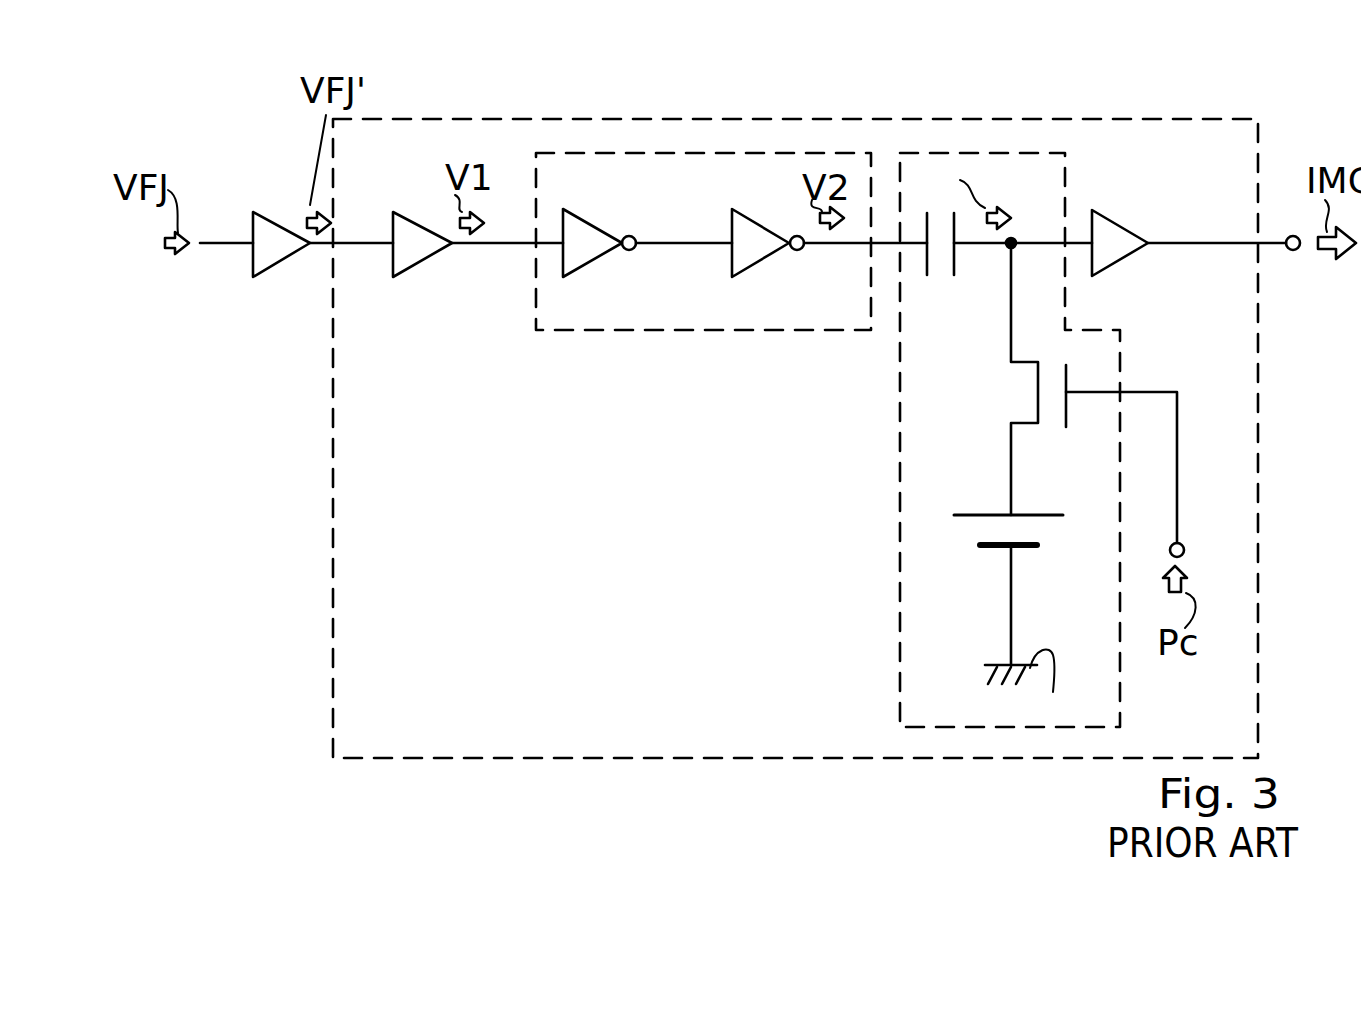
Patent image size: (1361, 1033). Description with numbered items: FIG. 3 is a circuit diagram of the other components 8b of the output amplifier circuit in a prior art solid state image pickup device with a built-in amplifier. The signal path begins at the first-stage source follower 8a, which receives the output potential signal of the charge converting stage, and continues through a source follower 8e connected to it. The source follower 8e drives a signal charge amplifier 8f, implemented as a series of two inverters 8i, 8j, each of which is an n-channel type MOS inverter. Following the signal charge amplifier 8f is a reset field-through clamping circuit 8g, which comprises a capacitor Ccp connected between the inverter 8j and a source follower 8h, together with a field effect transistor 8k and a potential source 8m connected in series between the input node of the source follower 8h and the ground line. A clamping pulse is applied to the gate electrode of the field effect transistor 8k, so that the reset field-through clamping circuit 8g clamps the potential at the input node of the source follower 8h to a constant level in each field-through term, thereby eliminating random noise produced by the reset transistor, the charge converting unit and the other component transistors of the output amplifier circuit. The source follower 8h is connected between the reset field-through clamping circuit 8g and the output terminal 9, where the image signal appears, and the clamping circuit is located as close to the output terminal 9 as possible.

The first-stage source follower 8a is at (273, 220).
The other components 8b is at (1124, 119).
The source follower 8e is at (408, 268).
The signal charge amplifier 8f is at (703, 278).
The reset field-through clamping circuit 8g is at (897, 692).
The source follower 8h is at (1120, 225).
The inverter 8i is at (590, 262).
The inverter 8j is at (748, 263).
The field effect transistor 8k is at (1066, 378).
The potential source 8m is at (1030, 515).
The output terminal 9 is at (1290, 250).
The capacitor Ccp is at (956, 265).